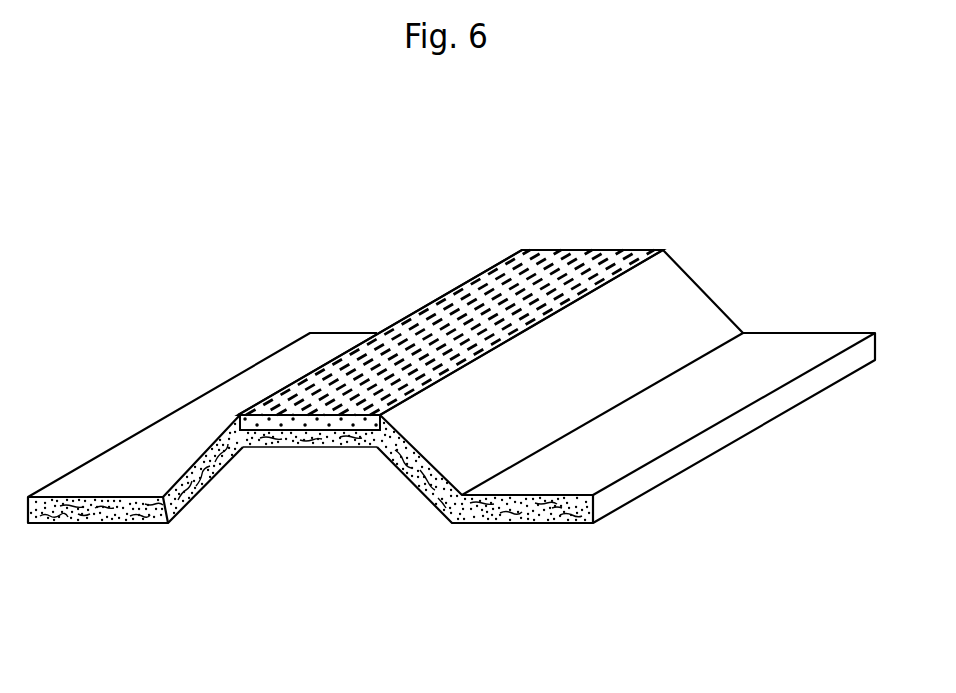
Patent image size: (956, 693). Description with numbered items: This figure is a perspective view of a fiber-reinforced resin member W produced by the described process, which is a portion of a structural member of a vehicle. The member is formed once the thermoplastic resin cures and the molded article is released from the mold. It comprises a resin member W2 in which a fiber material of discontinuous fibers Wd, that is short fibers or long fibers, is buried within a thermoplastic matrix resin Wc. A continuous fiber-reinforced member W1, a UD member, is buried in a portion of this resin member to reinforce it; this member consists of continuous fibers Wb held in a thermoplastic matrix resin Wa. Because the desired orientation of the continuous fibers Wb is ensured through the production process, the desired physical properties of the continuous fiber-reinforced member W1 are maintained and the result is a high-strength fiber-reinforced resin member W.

The fiber-reinforced resin member W is at (451, 412).
The continuous fiber-reinforced member W1 is at (450, 287).
The matrix resin Wa is at (403, 323).
The continuous fiber Wb is at (560, 297).
The resin member W2 is at (310, 533).
The matrix resin Wc is at (67, 515).
The discontinuous fiber Wd is at (45, 606).